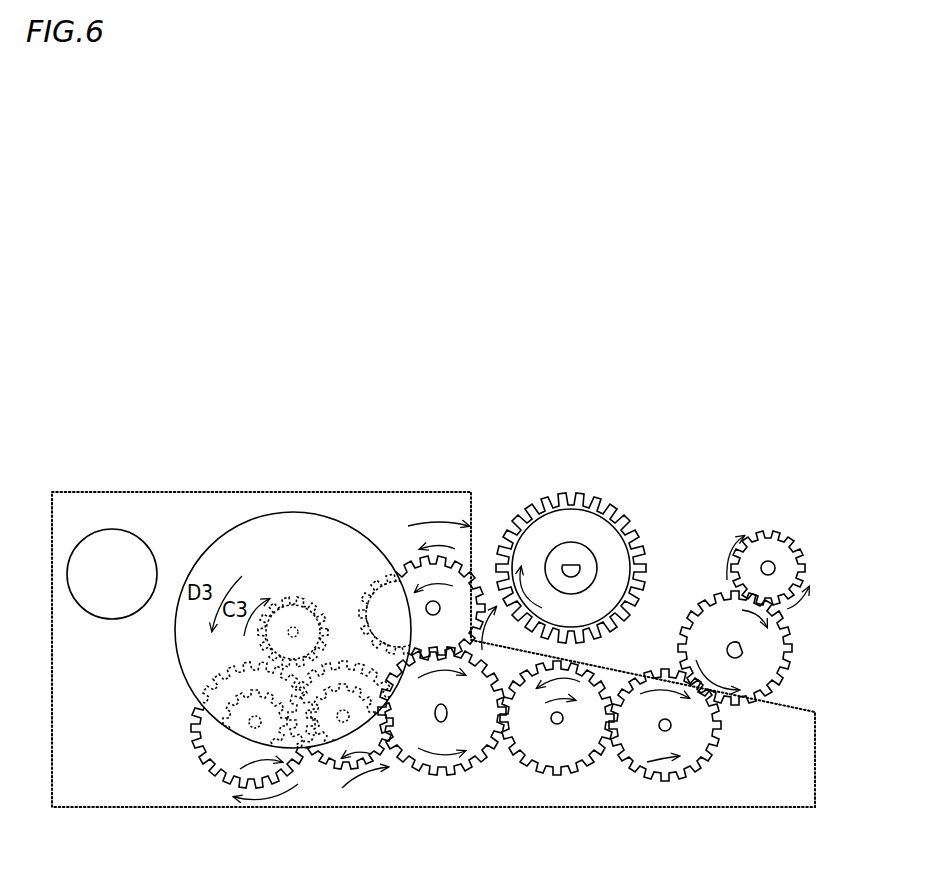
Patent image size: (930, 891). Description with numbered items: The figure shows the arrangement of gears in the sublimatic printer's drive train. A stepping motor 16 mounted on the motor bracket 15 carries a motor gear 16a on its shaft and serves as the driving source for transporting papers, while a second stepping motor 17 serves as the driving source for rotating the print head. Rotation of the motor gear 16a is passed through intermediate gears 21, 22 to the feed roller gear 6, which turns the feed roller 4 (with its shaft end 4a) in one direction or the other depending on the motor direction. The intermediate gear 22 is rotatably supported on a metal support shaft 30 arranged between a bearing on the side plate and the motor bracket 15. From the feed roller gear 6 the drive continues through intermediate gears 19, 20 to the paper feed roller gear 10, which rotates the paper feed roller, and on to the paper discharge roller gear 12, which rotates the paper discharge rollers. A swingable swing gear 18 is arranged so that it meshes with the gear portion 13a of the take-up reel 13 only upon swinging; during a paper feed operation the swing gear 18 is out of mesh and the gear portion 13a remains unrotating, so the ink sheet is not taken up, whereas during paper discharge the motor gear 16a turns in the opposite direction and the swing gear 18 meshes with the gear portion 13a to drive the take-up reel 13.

The feed roller 4 is at (470, 775).
The shaft end 4a is at (450, 707).
The feed roller gear 6 is at (442, 747).
The paper feed roller gear 10 is at (712, 600).
The paper discharge roller gear 12 is at (777, 534).
The take-up reel 13 is at (564, 538).
The gear portion 13a is at (571, 493).
The motor bracket 15 is at (108, 492).
The stepping motor 16 is at (237, 525).
The motor gear 16a is at (297, 597).
The stepping motor 17 is at (141, 540).
The swing gear 18 is at (408, 562).
The intermediate gear 19 is at (553, 775).
The intermediate gear 20 is at (655, 782).
The intermediate gear 21 is at (228, 783).
The intermediate gear 22 is at (333, 770).
The support shaft 30 is at (340, 722).